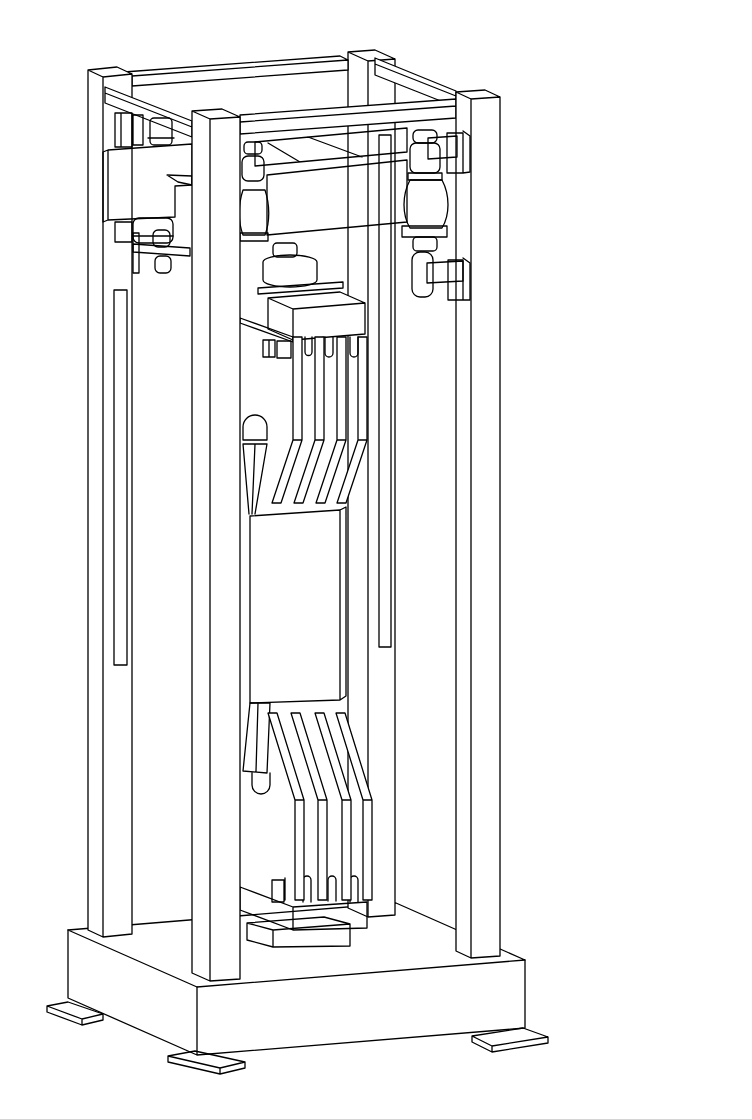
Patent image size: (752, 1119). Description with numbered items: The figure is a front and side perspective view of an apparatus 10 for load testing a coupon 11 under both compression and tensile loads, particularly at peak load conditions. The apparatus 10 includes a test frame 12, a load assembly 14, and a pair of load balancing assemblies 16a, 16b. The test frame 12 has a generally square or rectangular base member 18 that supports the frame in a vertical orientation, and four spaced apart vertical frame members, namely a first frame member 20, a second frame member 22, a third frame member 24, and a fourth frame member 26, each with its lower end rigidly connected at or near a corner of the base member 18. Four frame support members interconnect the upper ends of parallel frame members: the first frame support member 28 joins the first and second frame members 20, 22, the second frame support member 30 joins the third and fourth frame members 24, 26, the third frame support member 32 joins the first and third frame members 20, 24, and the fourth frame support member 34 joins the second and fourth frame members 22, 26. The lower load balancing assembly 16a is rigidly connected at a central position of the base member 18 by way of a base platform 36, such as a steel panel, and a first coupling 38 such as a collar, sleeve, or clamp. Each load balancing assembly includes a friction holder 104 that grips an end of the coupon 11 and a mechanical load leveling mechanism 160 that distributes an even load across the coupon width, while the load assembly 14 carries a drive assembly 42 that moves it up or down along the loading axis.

The apparatus for load testing a coupon 10 is at (598, 79).
The coupon 11 is at (330, 598).
The test frame 12 is at (321, 486).
The load assembly 14 is at (110, 193).
The first load balancing assembly 16a is at (370, 822).
The second load balancing assembly 16b is at (254, 392).
The base member 18 is at (517, 986).
The first frame member 20 is at (493, 367).
The second frame member 22 is at (220, 548).
The third frame member 24 is at (372, 52).
The fourth frame member 26 is at (107, 70).
The first frame support member 28 is at (283, 114).
The second frame support member 30 is at (235, 73).
The third frame support member 32 is at (418, 82).
The fourth frame support member 34 is at (112, 97).
The base platform 36 is at (417, 921).
The first coupling 38 is at (340, 938).
The drive assembly 42 is at (442, 200).
The friction holder 104 is at (240, 476).
The mechanical load leveling mechanism 160 is at (255, 348).